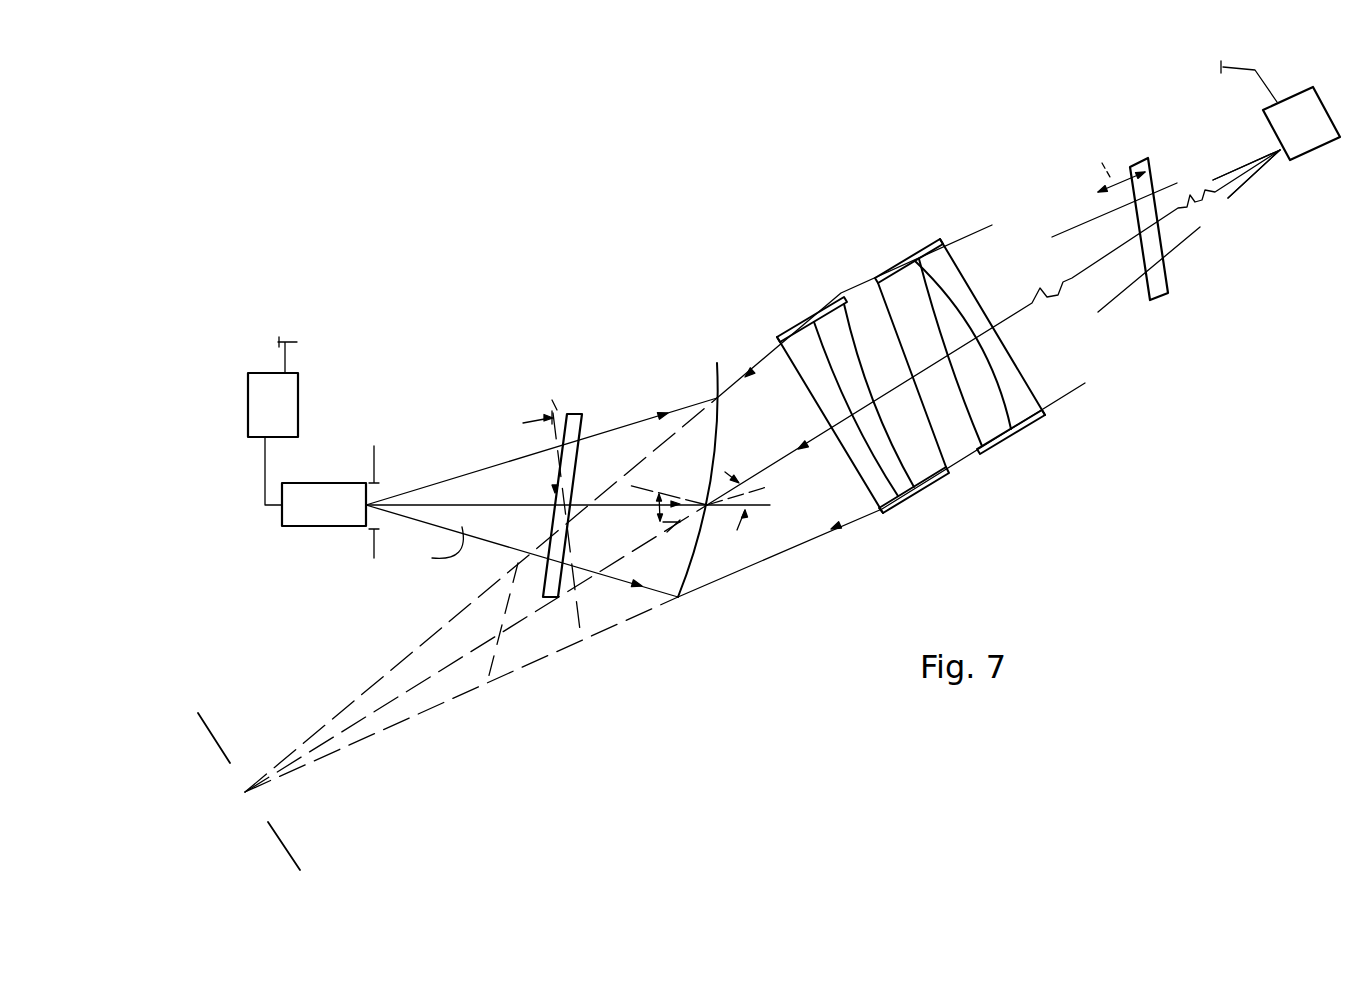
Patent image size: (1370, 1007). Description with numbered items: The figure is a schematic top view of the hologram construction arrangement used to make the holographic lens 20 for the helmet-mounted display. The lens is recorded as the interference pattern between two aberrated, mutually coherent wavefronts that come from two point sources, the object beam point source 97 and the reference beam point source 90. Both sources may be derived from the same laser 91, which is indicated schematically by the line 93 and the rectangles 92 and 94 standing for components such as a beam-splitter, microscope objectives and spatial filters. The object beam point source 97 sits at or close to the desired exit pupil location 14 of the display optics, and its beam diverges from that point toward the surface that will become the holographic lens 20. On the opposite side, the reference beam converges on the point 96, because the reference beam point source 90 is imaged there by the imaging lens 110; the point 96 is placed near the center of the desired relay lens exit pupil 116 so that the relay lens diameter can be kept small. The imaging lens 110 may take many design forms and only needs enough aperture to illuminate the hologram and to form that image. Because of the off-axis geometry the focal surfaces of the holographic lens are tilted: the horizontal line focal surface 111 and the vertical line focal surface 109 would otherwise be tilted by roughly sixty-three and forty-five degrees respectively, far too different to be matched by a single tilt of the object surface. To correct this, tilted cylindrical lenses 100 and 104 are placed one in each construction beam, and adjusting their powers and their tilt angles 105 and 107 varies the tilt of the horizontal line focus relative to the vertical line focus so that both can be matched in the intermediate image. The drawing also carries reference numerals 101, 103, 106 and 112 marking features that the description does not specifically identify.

The exit pupil location 14 is at (372, 541).
The holographic lens 20 is at (717, 442).
The reference beam point source 90 is at (1280, 152).
The laser 91 is at (299, 385).
The rectangle 92 is at (284, 483).
The line 93 is at (296, 350).
The rectangle 94 is at (1320, 98).
The point 96 is at (246, 795).
The object beam point source 97 is at (368, 503).
The tilted cylindrical lens 100 is at (582, 452).
The mirror axis 101 is at (748, 487).
The tilt angle 103 is at (656, 510).
The tilted cylindrical lens 104 is at (1148, 165).
The tilt angle 105 is at (1127, 180).
The reflected beam 106 is at (763, 468).
The tilt angle 107 is at (560, 413).
The vertical line focal surface 109 is at (577, 627).
The imaging lens 110 is at (957, 468).
The horizontal line focal surface 111 is at (490, 673).
The mirror reflection point 112 is at (717, 398).
The relay lens exit pupil 116 is at (287, 857).